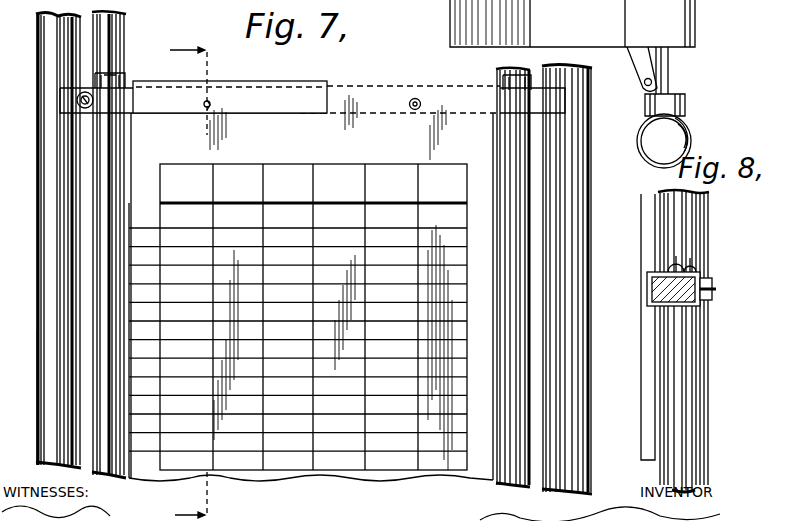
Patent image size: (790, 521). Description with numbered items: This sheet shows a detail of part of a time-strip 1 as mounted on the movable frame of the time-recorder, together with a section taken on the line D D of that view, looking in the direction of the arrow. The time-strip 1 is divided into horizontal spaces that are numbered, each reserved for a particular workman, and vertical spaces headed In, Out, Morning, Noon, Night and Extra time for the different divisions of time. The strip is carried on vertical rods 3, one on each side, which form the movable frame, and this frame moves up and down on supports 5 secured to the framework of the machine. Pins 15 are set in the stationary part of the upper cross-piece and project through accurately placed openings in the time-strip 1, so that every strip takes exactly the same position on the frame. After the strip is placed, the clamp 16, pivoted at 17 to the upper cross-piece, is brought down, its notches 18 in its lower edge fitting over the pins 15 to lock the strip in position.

The time-strip 1 is at (311, 288).
The vertical rods 3 is at (105, 302).
The supports 5 is at (45, 360).
The pins 15 is at (415, 98).
The clamp 16 is at (283, 96).
The pivot of clamp 17 is at (87, 93).
The notches 18 is at (204, 105).
The section line D D is at (199, 281).